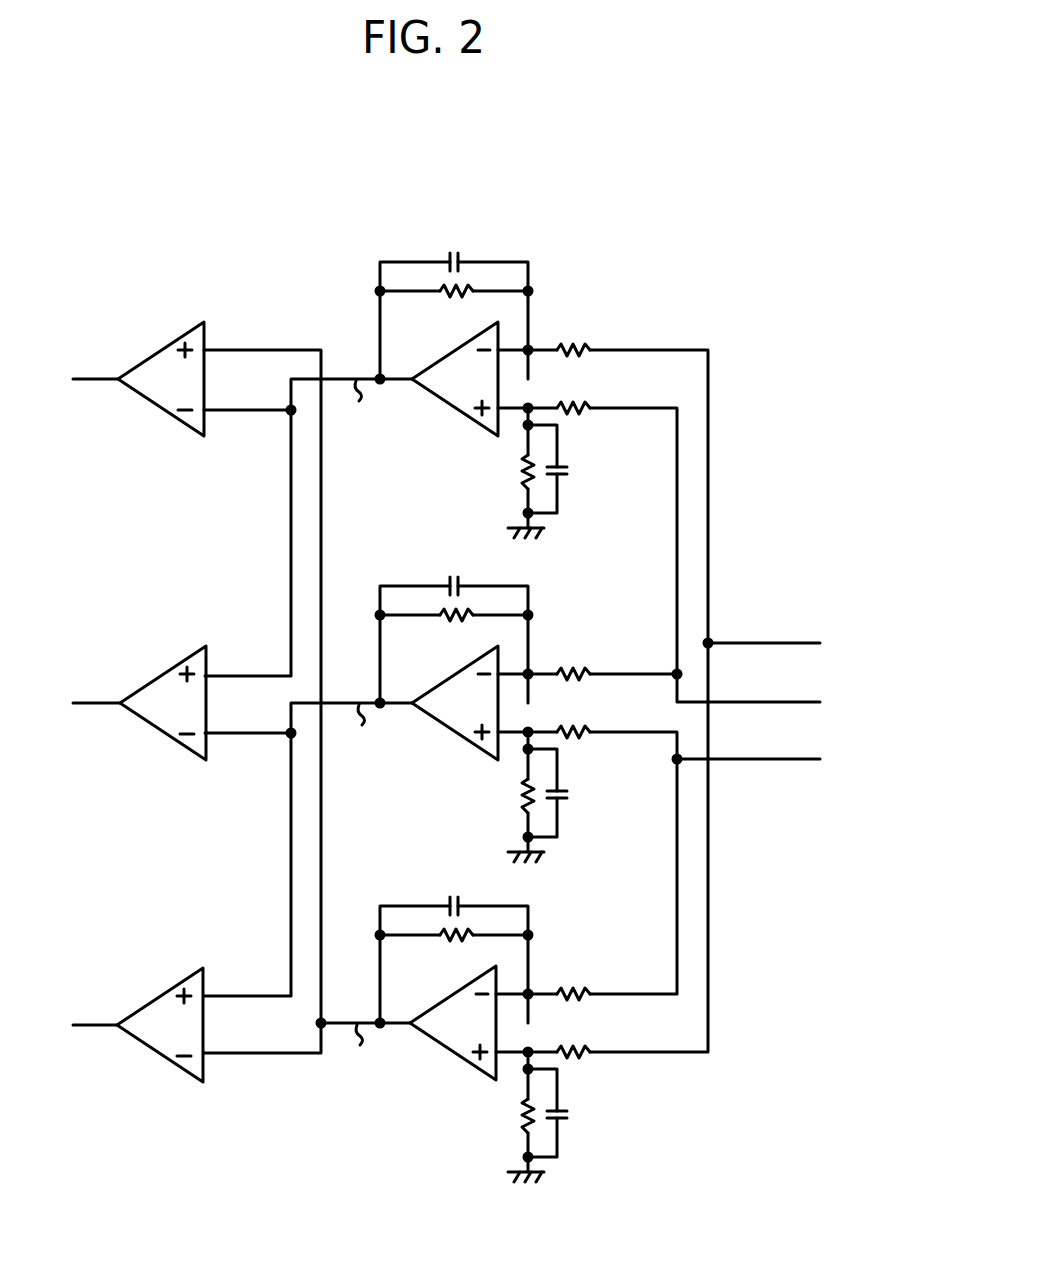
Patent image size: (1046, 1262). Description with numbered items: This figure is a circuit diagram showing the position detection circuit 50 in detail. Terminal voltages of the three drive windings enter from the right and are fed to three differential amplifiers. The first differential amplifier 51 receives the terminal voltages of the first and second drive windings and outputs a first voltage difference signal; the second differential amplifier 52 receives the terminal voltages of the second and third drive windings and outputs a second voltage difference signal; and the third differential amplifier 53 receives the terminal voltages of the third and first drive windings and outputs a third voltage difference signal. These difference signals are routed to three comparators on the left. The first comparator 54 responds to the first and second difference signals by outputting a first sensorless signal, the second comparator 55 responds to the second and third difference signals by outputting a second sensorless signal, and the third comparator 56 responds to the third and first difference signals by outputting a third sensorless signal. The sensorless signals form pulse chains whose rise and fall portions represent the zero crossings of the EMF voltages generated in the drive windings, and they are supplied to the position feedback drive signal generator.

The position detection circuit 50 is at (687, 251).
The first differential amplifier 51 is at (466, 237).
The second differential amplifier 52 is at (427, 565).
The third differential amplifier 53 is at (427, 885).
The first comparator 54 is at (172, 652).
The second comparator 55 is at (170, 974).
The third comparator 56 is at (191, 331).